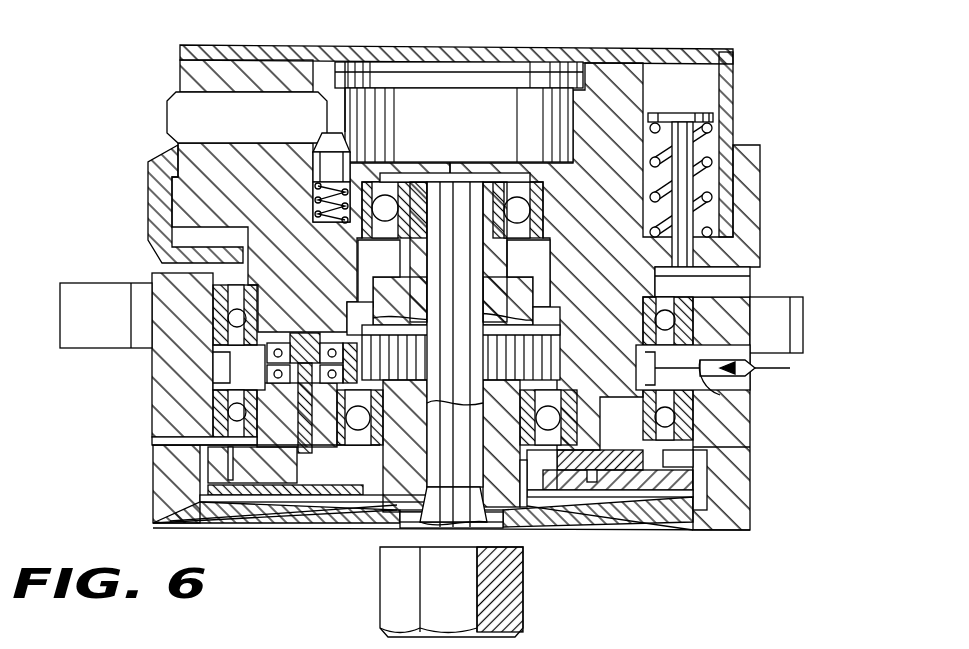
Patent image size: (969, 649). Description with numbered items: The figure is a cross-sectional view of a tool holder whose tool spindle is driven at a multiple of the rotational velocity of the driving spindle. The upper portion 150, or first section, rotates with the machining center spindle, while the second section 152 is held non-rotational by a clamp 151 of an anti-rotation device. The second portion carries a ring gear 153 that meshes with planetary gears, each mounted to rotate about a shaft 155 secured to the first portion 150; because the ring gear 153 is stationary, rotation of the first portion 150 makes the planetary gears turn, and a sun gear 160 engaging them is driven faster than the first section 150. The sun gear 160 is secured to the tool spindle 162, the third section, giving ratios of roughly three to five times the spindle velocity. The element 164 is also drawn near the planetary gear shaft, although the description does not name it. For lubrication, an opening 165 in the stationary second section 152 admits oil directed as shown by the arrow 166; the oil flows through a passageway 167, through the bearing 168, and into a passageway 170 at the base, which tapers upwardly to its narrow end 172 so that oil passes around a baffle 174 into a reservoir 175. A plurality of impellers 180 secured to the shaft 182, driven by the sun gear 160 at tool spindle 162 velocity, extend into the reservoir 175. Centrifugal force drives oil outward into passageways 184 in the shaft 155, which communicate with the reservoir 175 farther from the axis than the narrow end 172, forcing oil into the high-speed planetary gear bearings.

The upper portion 150 is at (627, 83).
The clamp 151 is at (793, 300).
The second section 152 is at (767, 283).
The ring gear 153 is at (230, 363).
The shaft 155 is at (307, 332).
The sun gear 160 is at (543, 335).
The tool spindle 162 is at (500, 533).
The detent spring cartridge 164 is at (262, 332).
The opening 165 is at (710, 380).
The arrow 166 is at (783, 368).
The passageway 167 is at (710, 373).
The bearing 168 is at (672, 417).
The passageway 170 is at (700, 485).
The narrow end 172 is at (573, 503).
The baffle 174 is at (693, 530).
The reservoir 175 is at (593, 457).
The impellers 180 is at (325, 497).
The shaft 182 is at (403, 477).
The passageways 184 is at (303, 422).